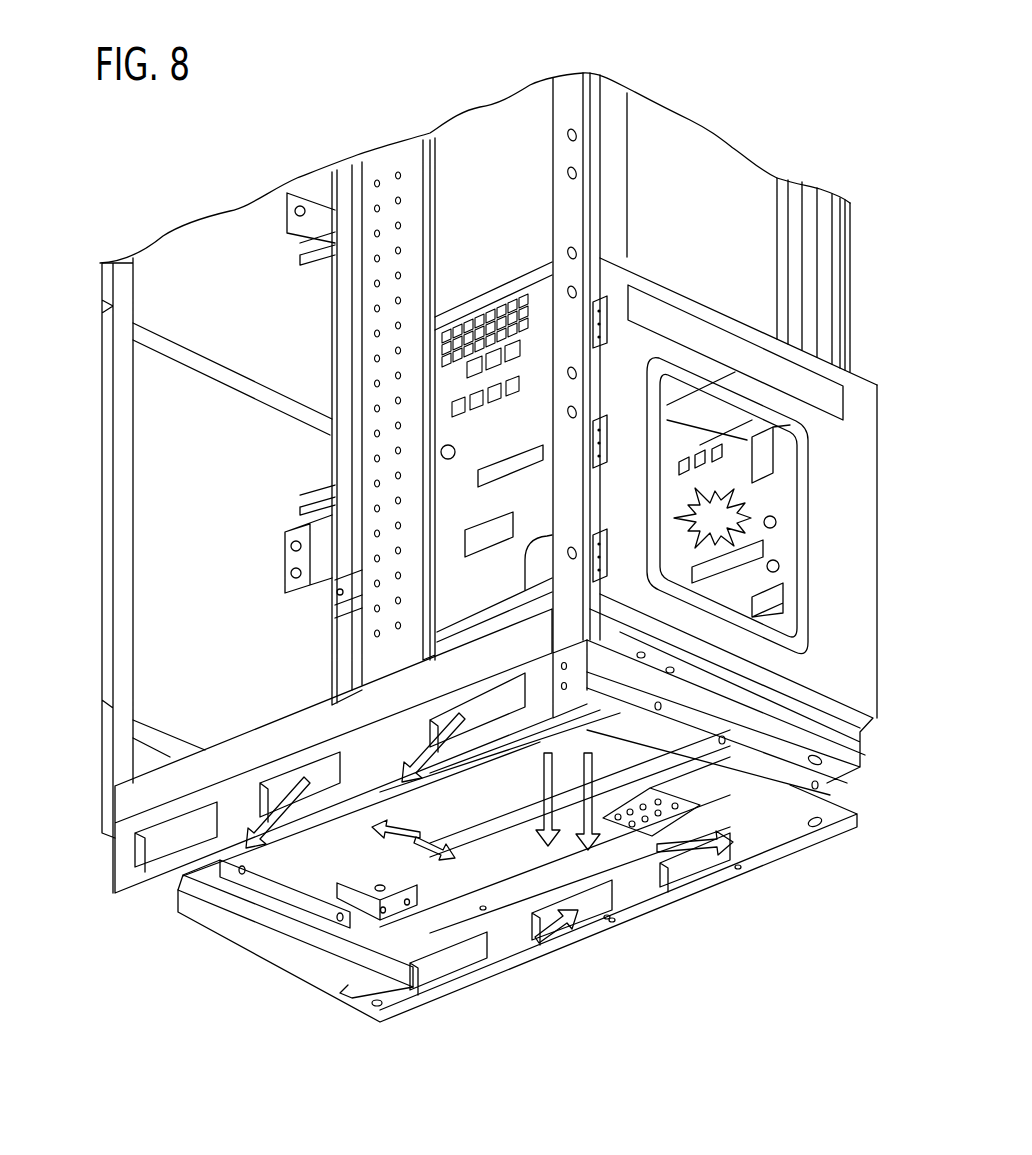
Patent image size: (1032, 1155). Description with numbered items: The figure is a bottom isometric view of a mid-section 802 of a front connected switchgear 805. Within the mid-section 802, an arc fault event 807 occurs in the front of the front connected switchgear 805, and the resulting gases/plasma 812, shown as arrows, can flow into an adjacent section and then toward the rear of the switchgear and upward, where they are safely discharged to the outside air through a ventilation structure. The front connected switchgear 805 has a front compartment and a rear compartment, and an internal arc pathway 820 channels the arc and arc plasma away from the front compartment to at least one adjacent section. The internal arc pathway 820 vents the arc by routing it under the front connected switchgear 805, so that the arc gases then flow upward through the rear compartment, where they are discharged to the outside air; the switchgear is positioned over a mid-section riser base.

The front connected switchgear 805 is at (476, 463).
The arc fault event 807 is at (712, 520).
The internal arc pathway 820 is at (420, 832).
The gases/plasma 812 is at (728, 856).
The mid-section 802 is at (502, 891).